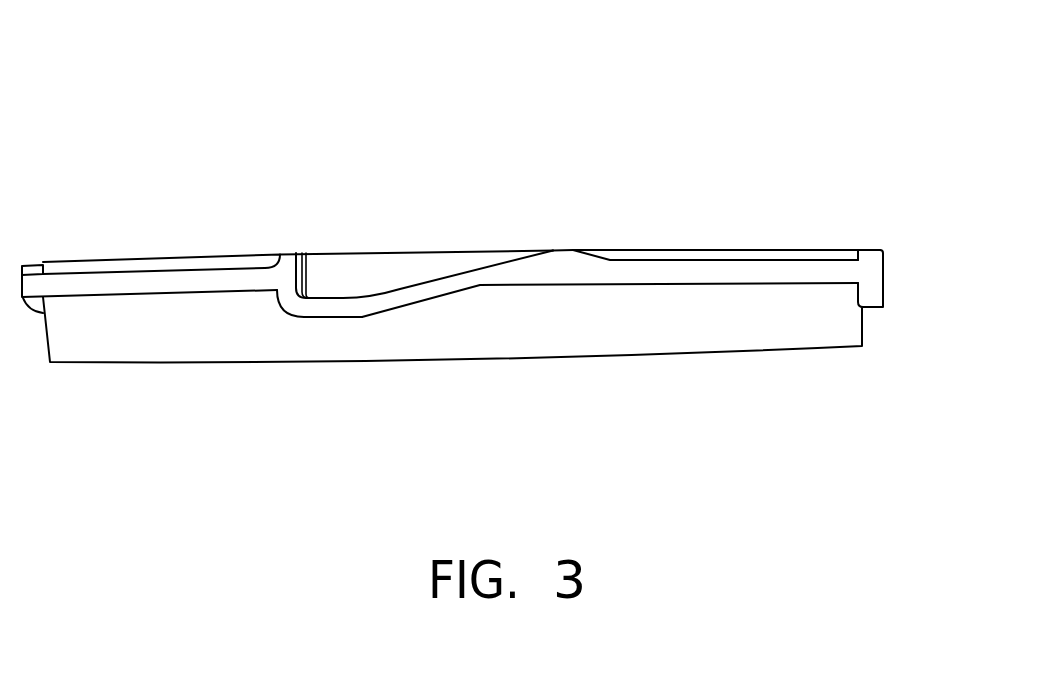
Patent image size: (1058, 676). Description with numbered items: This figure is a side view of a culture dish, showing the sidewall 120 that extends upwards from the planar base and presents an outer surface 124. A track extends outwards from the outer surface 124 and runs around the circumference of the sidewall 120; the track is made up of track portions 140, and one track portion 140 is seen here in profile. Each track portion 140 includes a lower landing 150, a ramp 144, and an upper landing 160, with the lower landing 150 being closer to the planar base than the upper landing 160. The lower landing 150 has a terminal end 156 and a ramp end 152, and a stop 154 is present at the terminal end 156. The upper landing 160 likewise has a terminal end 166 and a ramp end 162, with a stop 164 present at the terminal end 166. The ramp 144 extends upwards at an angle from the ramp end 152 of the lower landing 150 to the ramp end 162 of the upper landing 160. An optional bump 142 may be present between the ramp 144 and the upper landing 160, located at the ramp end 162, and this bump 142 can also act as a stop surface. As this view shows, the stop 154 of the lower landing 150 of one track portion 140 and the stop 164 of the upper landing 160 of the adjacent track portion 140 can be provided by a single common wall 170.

The sidewall 120 is at (730, 340).
The outer surface 124 is at (580, 342).
The track portion 140 is at (116, 132).
The bump 142 is at (553, 250).
The ramp 144 is at (447, 297).
The lower landing 150 is at (340, 297).
The ramp end 152 is at (375, 320).
The stop 154 is at (305, 277).
The terminal end 156 is at (298, 327).
The upper landing 160 is at (667, 256).
The ramp end 162 is at (573, 250).
The stop 164 is at (866, 249).
The terminal end 166 is at (832, 249).
The common wall 170 is at (283, 277).